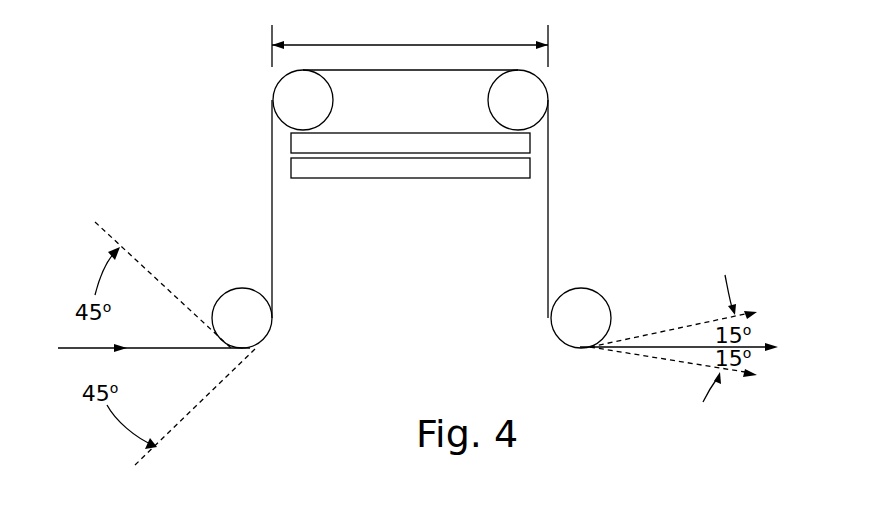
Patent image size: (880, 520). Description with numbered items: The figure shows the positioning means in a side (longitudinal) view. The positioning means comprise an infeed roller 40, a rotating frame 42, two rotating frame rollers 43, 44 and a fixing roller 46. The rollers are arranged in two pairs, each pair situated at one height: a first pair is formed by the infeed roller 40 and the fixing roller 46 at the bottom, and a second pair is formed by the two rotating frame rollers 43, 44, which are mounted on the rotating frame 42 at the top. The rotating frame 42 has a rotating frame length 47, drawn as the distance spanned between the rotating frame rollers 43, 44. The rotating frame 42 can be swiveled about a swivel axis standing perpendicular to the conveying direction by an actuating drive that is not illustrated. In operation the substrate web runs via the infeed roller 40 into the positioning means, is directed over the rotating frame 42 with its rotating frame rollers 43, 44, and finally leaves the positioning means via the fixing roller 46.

The infeed roller 40 is at (272, 330).
The rotating frame 42 is at (353, 178).
The rotating frame roller 43 is at (273, 90).
The rotating frame roller 44 is at (547, 85).
The fixing roller 46 is at (550, 330).
The rotating frame length 47 is at (410, 44).